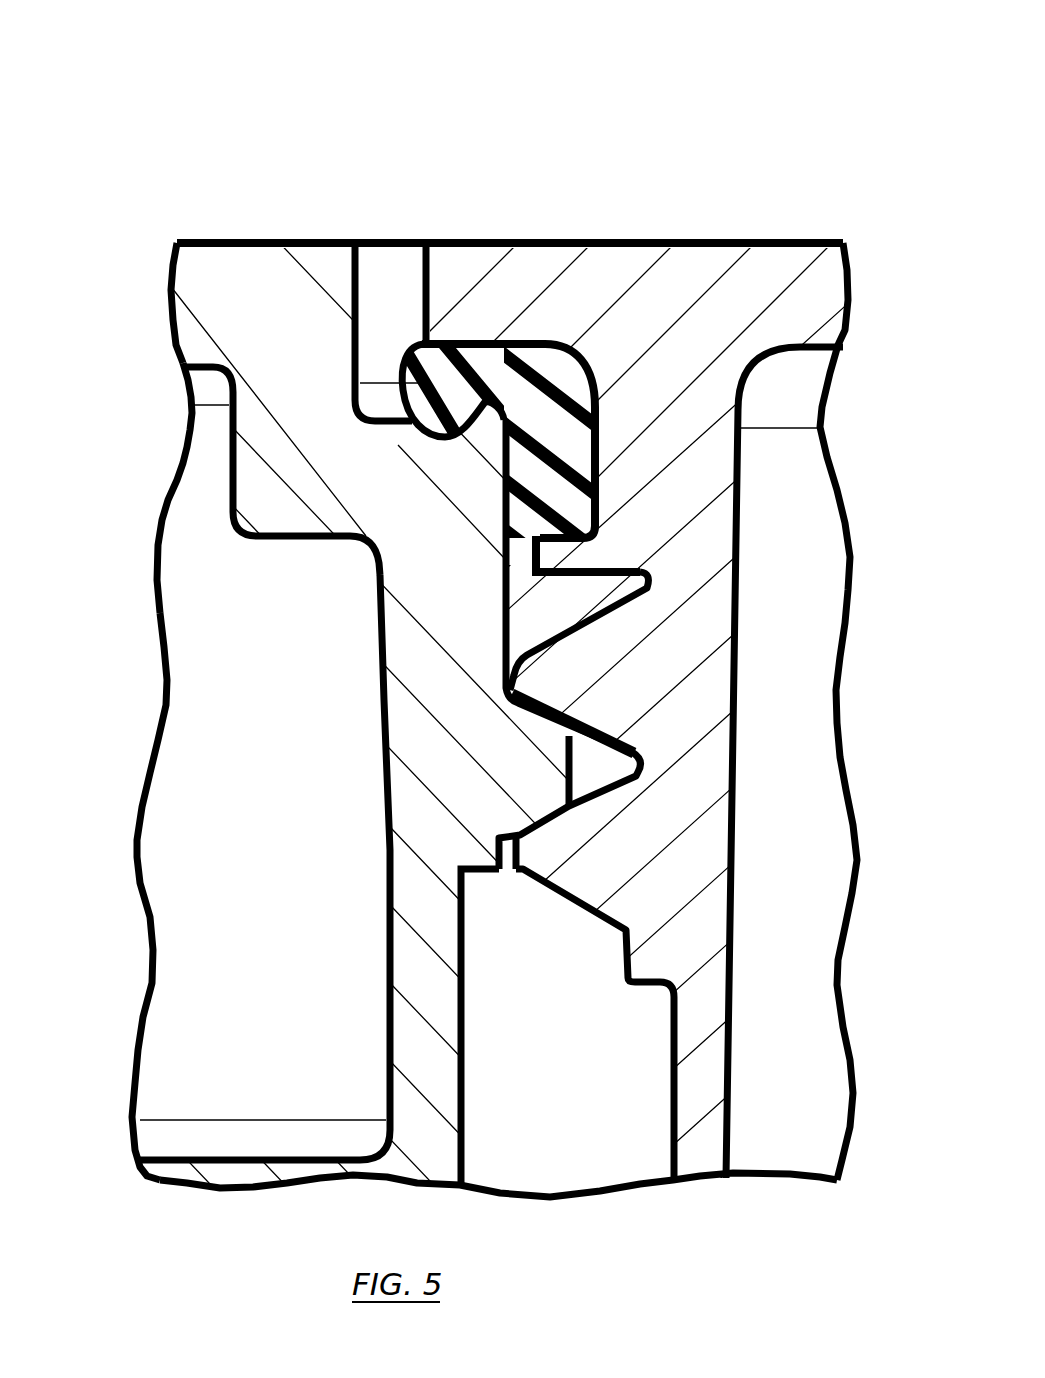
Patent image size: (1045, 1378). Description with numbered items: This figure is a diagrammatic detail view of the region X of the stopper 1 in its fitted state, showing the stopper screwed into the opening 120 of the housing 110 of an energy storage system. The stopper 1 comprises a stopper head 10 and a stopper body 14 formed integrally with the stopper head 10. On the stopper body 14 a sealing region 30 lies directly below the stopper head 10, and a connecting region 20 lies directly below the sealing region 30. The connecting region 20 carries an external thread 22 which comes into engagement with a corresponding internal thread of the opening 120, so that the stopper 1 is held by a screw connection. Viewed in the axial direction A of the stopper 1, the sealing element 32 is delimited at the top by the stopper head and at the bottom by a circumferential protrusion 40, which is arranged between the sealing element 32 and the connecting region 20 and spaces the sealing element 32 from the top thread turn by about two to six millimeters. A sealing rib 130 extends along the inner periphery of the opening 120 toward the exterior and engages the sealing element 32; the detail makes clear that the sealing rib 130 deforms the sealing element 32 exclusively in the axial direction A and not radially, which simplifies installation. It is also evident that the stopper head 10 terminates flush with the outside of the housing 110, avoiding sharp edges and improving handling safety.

The stopper 1 is at (805, 203).
The stopper head 10 is at (685, 265).
The stopper body 14 is at (687, 1100).
The connecting region 20 is at (150, 682).
The external thread 22 is at (577, 665).
The sealing region 30 is at (170, 423).
The sealing element 32 is at (570, 410).
The circumferential protrusion 40 is at (563, 548).
The housing 110 is at (257, 297).
The opening 120 is at (400, 203).
The sealing rib 130 is at (486, 420).
The region X is at (143, 123).
The axial direction A is at (51, 1150).